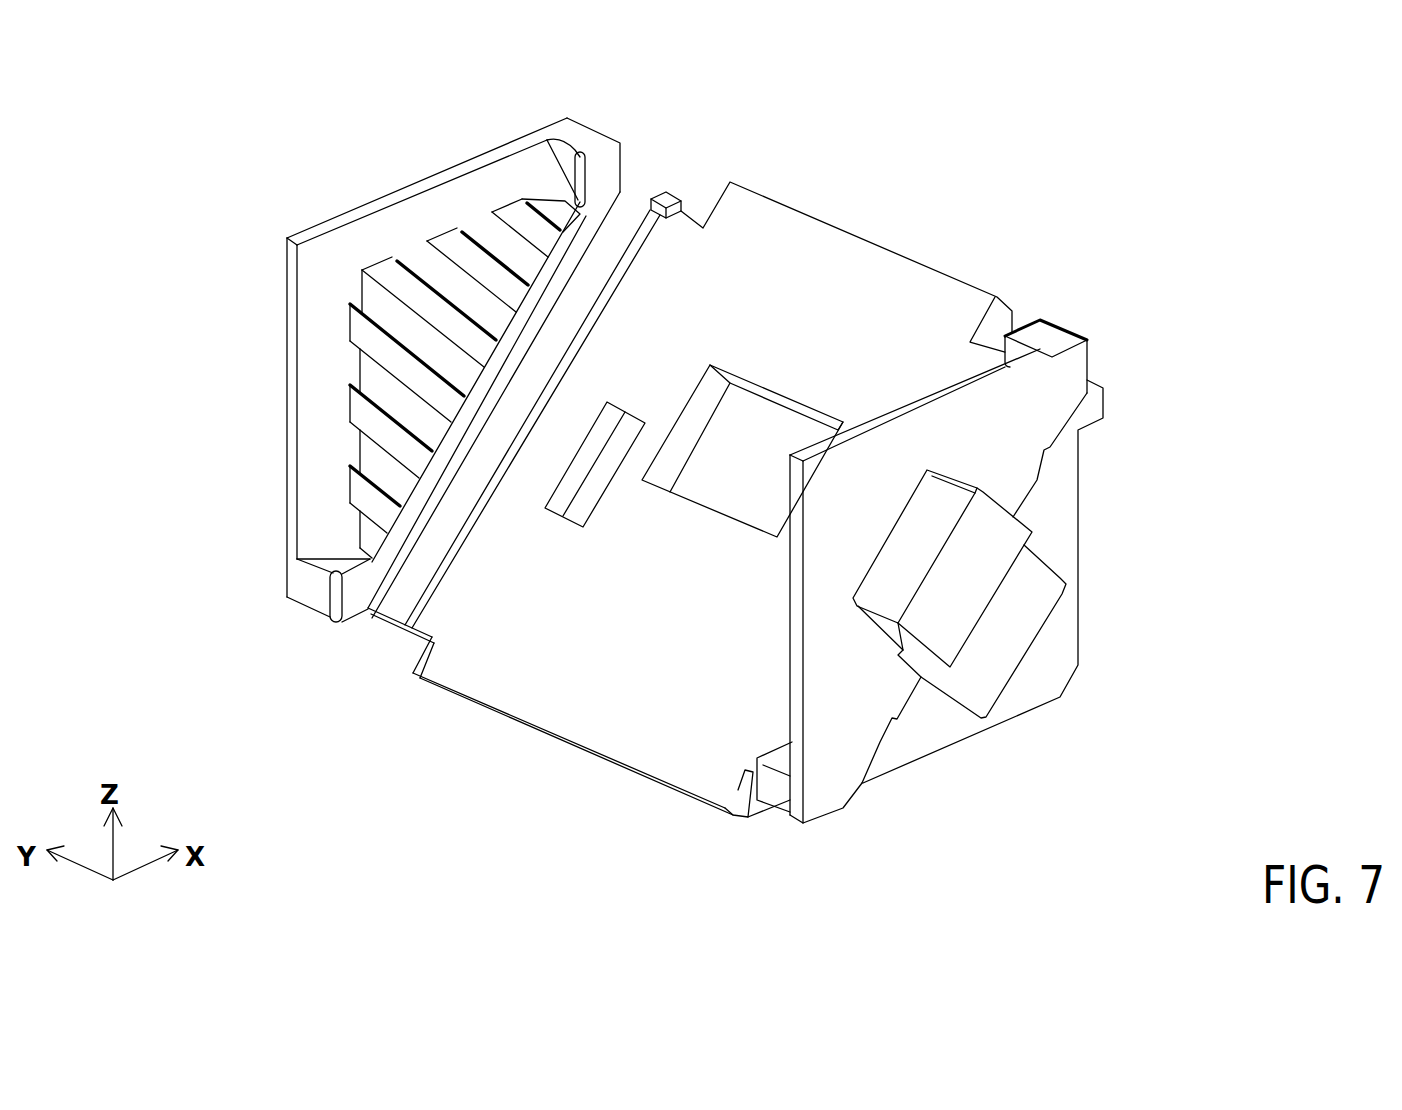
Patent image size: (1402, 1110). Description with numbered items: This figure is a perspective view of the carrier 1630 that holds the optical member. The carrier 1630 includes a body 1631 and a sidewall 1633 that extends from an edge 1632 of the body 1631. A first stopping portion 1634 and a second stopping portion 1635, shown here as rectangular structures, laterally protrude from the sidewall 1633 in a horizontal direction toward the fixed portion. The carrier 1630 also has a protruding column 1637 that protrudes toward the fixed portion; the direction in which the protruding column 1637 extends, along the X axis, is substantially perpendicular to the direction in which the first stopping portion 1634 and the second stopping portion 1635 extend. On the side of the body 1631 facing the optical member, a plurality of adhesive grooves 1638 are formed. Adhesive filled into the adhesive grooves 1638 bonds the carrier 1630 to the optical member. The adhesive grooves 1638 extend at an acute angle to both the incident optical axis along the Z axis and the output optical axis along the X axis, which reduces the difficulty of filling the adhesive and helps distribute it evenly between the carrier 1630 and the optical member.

The carrier 1630 is at (222, 57).
The body 1631 is at (833, 307).
The edge 1632 is at (1035, 368).
The sidewall 1633 is at (1000, 457).
The first stopping portion 1634 is at (1012, 618).
The second stopping portion 1635 is at (985, 530).
The protruding column 1637 is at (661, 200).
The adhesive groove 1638 is at (441, 275).